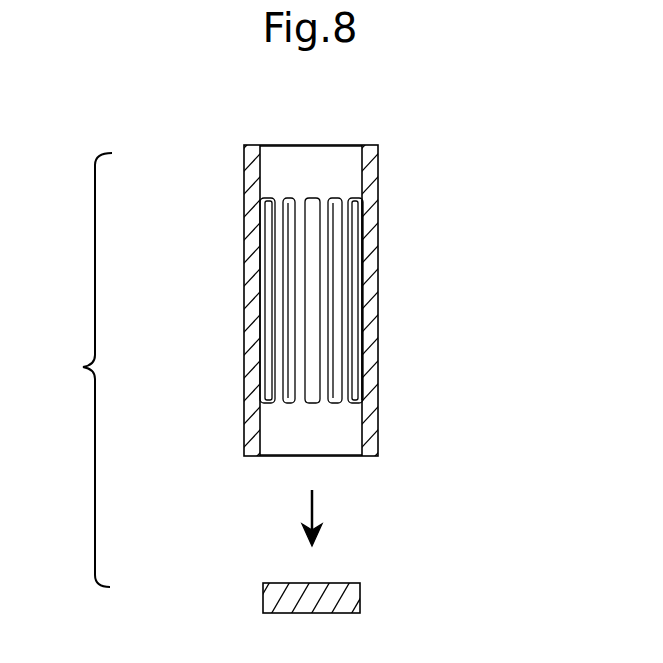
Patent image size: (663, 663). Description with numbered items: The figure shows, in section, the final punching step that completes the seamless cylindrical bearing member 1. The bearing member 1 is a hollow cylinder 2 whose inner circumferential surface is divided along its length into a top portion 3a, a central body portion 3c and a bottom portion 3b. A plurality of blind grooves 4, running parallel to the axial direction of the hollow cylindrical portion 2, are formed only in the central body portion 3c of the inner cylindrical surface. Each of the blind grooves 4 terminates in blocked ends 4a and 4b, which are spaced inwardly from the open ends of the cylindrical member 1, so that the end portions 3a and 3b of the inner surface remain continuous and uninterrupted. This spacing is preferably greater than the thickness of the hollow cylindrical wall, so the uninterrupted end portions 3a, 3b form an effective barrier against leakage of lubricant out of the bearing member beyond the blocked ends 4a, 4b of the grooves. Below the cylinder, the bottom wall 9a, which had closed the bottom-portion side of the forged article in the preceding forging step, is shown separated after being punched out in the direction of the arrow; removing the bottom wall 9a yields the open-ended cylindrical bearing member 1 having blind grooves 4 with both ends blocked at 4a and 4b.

The bearing member 1 is at (398, 215).
The hollow cylinder 2 is at (372, 318).
The top portion 3a is at (362, 182).
The bottom portion 3b is at (356, 420).
The central body portion 3c is at (370, 276).
The blind grooves 4 is at (310, 263).
The blocked end 4a is at (313, 198).
The blocked end 4b is at (313, 403).
The bottom wall 9a is at (325, 592).